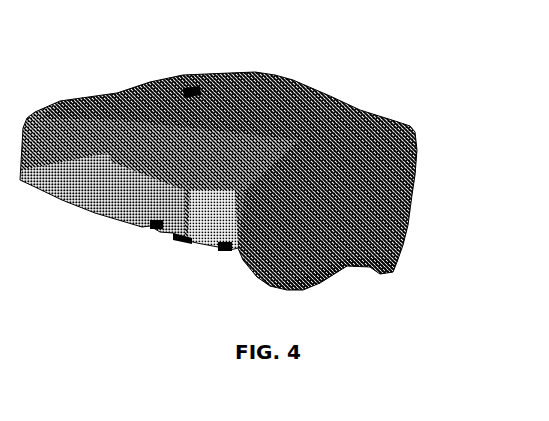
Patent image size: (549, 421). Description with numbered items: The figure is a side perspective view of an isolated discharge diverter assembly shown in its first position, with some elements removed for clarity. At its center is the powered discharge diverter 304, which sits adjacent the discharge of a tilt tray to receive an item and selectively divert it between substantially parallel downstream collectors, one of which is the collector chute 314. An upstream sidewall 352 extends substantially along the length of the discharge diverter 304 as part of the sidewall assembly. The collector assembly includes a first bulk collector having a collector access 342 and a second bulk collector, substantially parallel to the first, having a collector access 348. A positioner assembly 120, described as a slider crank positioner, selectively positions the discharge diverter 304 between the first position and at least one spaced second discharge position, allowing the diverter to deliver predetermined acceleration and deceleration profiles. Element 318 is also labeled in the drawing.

The powered discharge diverter 304 is at (115, 92).
The upstream sidewall 352 is at (190, 77).
The collector chute 314 is at (273, 92).
The collector access 342 is at (415, 172).
The collector access 348 is at (397, 263).
The positioner assembly 120 is at (178, 193).
The mounting foot 318 is at (248, 212).